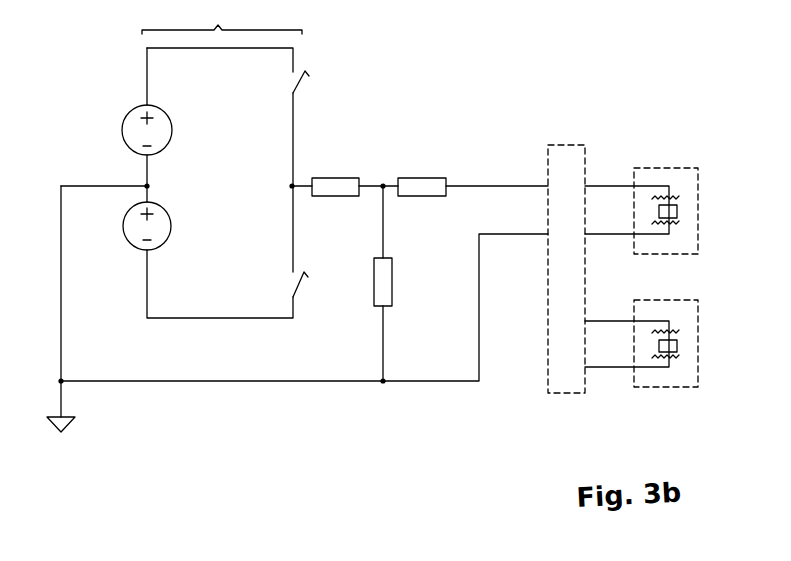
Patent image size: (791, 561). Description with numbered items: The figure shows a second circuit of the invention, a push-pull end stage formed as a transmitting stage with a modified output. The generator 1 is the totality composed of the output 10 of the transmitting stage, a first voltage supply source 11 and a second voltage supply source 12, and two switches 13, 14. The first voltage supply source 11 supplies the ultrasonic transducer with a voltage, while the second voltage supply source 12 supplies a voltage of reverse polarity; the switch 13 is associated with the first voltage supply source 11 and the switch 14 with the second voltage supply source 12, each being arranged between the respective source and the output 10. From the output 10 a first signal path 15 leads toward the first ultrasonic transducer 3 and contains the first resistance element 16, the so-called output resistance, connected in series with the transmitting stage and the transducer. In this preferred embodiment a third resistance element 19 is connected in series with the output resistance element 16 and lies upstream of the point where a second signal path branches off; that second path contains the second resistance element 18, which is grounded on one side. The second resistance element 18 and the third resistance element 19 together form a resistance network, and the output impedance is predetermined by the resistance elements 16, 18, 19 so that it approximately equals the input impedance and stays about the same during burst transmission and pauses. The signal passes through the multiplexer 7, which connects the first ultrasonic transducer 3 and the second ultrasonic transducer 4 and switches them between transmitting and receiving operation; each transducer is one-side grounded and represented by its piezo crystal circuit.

The generator 1 is at (219, 25).
The first ultrasonic transducer 3 is at (640, 178).
The second ultrasonic transducer 4 is at (640, 310).
The multiplexer 7 is at (552, 152).
The output of the transmitting stage 10 is at (295, 181).
The first voltage supply source 11 is at (162, 130).
The second voltage supply source 12 is at (167, 230).
The switch 13 is at (305, 280).
The switch 14 is at (306, 76).
The first signal path 15 is at (367, 178).
The first resistance element 16 is at (430, 186).
The second resistance element 18 is at (385, 287).
The third resistance element 19 is at (338, 191).